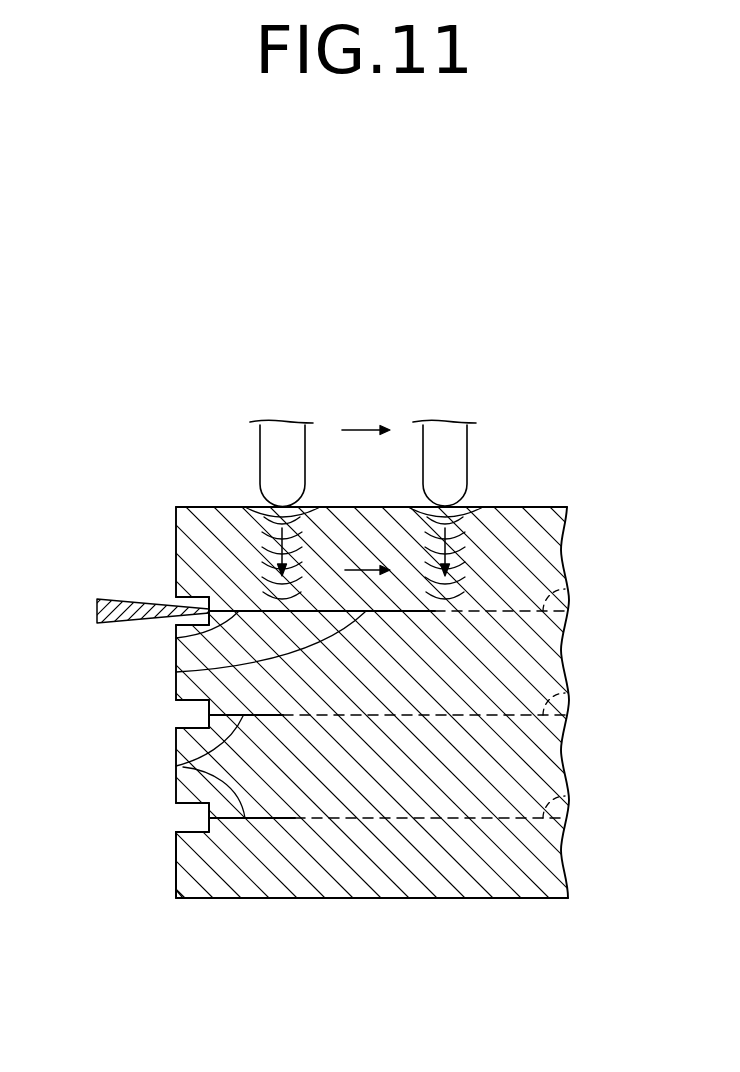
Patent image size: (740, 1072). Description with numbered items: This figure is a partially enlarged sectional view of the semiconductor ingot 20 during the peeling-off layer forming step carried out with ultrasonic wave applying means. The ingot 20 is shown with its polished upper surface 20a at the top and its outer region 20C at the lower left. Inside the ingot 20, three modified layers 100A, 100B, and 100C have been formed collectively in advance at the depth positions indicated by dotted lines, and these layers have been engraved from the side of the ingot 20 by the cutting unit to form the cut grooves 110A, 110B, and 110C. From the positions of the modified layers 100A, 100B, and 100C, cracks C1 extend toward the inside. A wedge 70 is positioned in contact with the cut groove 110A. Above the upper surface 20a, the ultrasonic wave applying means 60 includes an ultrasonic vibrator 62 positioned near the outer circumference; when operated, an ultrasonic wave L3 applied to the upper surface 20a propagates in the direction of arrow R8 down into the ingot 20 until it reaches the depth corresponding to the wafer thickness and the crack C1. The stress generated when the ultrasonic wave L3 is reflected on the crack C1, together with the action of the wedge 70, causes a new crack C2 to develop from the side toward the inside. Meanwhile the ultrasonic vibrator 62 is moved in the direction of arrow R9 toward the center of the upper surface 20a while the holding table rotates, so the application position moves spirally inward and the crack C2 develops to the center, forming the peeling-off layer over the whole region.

The semiconductor ingot 20 is at (168, 527).
The upper surface 20a is at (204, 506).
The lower portion of workpiece 20C is at (176, 876).
The laser welding device 60 is at (245, 433).
The ultrasonic vibrator 62 is at (272, 462).
The arrow R9 is at (360, 427).
The arrow R8 is at (268, 540).
The ultrasonic wave L3 is at (297, 540).
The cut groove 110A is at (204, 609).
The cut groove 110B is at (206, 716).
The cut groove 110C is at (206, 818).
The wedge 70 is at (99, 611).
The modified layer 100A is at (568, 590).
The modified layer 100B is at (568, 693).
The modified layer 100C is at (568, 796).
The crack C1 is at (176, 638).
The crack C2 is at (176, 672).